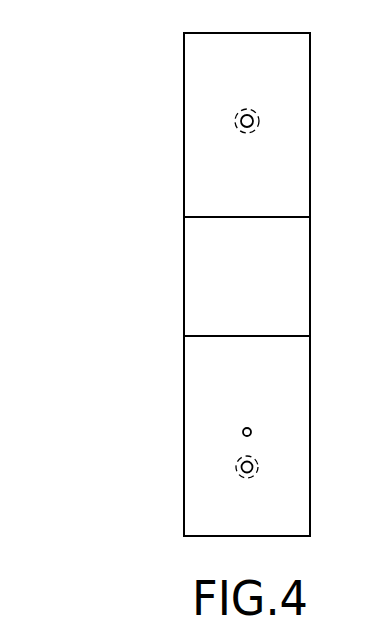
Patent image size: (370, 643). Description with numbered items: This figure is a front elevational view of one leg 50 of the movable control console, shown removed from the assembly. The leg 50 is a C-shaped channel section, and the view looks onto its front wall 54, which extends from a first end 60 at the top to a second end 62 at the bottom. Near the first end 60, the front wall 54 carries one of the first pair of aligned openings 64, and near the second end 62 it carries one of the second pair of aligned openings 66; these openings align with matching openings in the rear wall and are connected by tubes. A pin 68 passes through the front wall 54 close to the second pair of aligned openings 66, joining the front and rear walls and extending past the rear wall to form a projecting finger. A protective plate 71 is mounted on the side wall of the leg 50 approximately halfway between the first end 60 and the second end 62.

The leg 50 is at (130, 252).
The first end 60 is at (153, 52).
The front wall 54 is at (184, 170).
The first pair of aligned openings 64 is at (241, 125).
The protective plate 71 is at (188, 297).
The second end 62 is at (148, 523).
The pin 68 is at (243, 432).
The second pair of aligned openings 66 is at (241, 466).